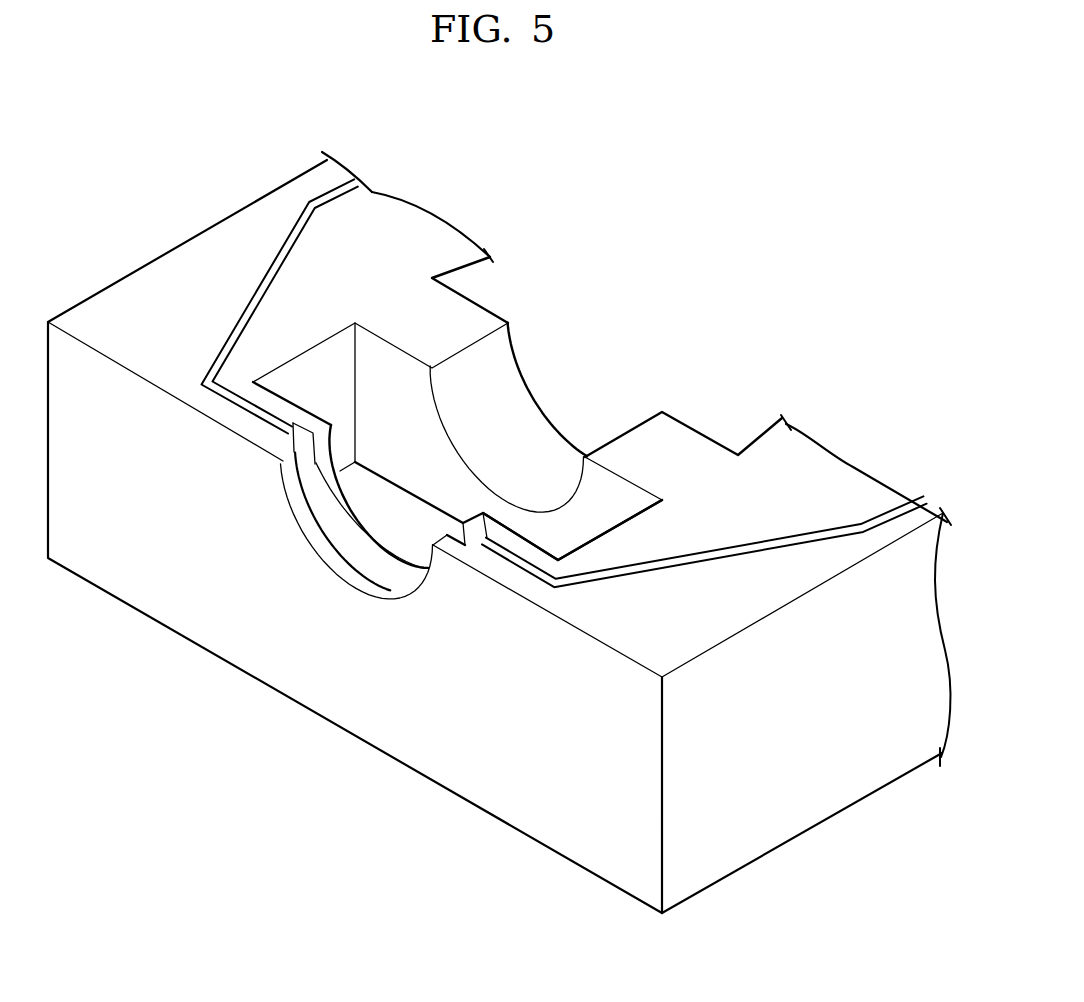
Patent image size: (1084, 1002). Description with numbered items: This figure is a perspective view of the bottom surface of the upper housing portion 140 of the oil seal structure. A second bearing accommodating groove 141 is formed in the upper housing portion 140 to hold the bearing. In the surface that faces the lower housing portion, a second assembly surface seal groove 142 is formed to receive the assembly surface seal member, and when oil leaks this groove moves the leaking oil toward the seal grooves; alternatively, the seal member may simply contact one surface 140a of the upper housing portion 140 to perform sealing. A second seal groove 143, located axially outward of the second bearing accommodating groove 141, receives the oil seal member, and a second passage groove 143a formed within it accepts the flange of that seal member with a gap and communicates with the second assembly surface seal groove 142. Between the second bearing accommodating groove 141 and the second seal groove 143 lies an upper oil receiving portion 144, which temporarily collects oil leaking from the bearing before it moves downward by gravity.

The upper housing portion 140 is at (157, 208).
The one surface of the upper housing portion 140a is at (380, 211).
The second bearing accommodating groove 141 is at (520, 412).
The second assembly surface seal groove 142 is at (277, 258).
The second seal groove 143 is at (367, 537).
The second passage groove 143a is at (293, 447).
The upper oil receiving portion 144 is at (621, 512).